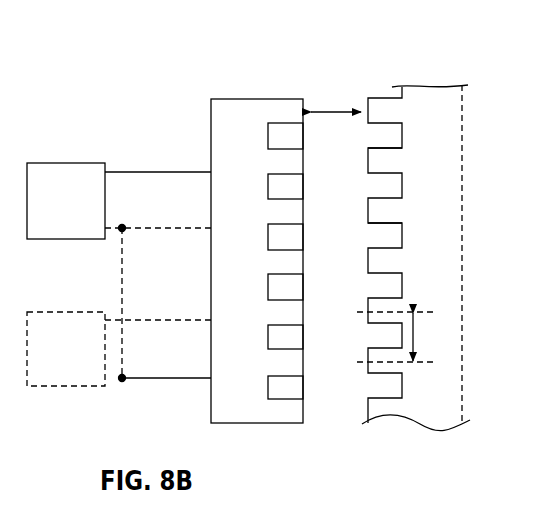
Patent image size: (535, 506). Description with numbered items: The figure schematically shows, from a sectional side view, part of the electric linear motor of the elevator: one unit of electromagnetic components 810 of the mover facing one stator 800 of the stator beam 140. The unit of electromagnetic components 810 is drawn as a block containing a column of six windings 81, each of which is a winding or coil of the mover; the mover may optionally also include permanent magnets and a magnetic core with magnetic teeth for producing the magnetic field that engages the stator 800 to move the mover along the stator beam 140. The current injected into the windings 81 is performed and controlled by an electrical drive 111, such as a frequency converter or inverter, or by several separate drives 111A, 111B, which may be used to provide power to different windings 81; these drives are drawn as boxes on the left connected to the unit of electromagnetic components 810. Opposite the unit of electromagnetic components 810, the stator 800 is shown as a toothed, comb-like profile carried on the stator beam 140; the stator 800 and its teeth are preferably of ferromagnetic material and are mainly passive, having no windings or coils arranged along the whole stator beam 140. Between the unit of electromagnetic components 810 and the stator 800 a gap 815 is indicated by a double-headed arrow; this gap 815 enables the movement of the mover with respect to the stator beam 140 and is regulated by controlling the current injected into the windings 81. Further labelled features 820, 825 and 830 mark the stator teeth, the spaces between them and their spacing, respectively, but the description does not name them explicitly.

The winding 81 is at (279, 141).
The electrical drive 111 is at (88, 198).
The first electrical drive 111A is at (92, 225).
The second electrical drive 111B is at (95, 360).
The stator beam 140 is at (447, 270).
The stator 800 is at (354, 414).
The unit of electromagnetic components 810 is at (291, 80).
The gap 815 is at (335, 112).
The protrusion 820 is at (385, 162).
The recess 825 is at (385, 237).
The pitch 830 is at (416, 335).